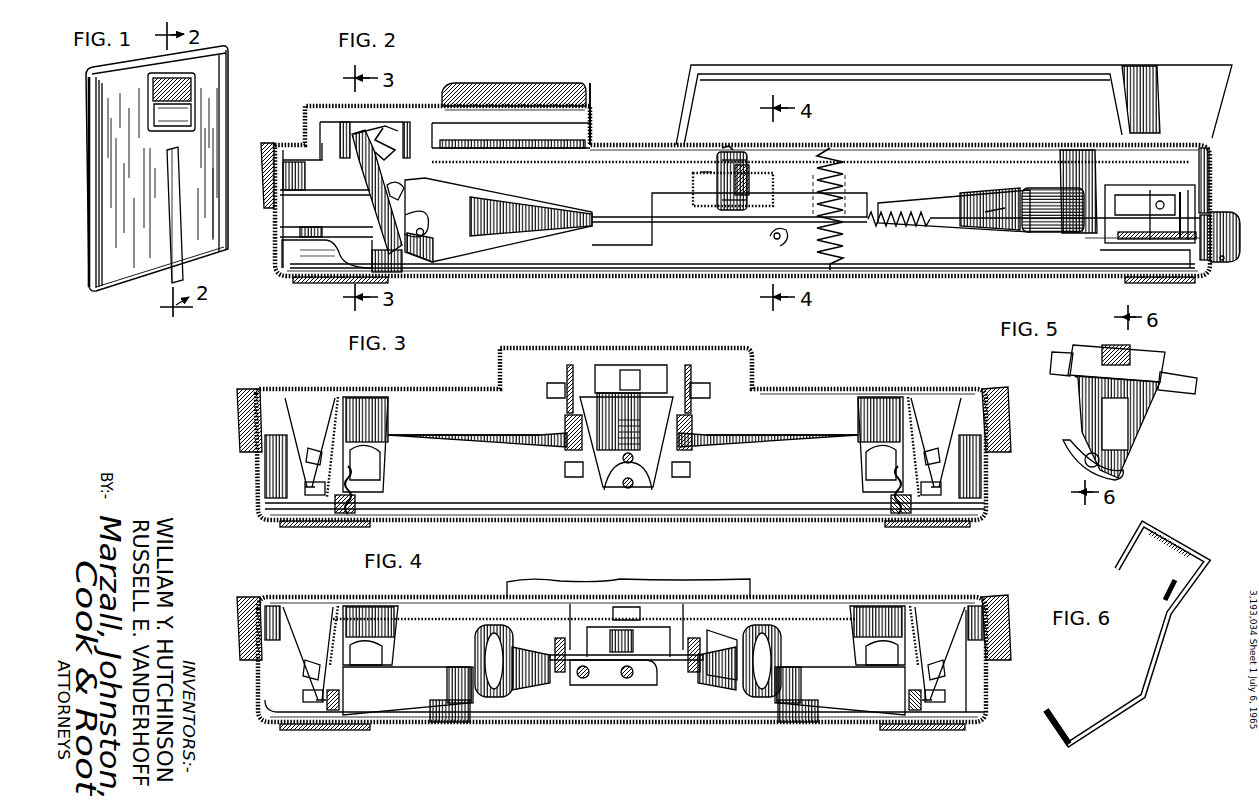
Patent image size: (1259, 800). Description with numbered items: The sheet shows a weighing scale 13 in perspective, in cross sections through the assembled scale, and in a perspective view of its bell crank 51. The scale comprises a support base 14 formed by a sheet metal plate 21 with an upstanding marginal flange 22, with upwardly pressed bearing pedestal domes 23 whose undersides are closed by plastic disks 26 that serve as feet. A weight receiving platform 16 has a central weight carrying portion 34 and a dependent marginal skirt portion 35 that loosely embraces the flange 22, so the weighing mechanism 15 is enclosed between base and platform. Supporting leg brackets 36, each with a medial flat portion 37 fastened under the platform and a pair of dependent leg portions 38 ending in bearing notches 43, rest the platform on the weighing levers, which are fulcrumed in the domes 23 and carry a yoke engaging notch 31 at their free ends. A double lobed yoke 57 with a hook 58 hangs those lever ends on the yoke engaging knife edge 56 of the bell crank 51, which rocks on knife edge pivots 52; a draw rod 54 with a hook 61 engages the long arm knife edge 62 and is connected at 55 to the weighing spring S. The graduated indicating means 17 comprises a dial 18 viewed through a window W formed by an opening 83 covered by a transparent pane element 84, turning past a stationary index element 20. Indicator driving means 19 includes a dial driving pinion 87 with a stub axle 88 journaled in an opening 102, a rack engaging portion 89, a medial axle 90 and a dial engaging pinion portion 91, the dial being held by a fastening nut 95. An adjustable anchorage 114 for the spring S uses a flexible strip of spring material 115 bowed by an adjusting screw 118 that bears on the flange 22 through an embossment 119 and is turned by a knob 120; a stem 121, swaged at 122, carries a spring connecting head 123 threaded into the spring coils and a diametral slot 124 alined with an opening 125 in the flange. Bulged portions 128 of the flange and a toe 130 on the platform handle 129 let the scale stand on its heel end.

In FIG. 1, the weighing scale 13 is at (106, 297).
In FIG. 1, the support base 14 is at (88, 274).
In FIG. 2, the support base 14 is at (272, 284).
In FIG. 3, the support base 14 is at (254, 515).
In FIG. 4, the support base 14 is at (254, 723).
In FIG. 2, the weighing mechanism 15 is at (461, 262).
In FIG. 4, the weighing mechanism 15 is at (624, 684).
In FIG. 2, the weight receiving platform 16 is at (265, 135).
In FIG. 3, the weight receiving platform 16 is at (990, 384).
In FIG. 4, the weight receiving platform 16 is at (994, 594).
In FIG. 2, the graduated indicating means 17 is at (455, 72).
In FIG. 4, the graduated indicating means 17 is at (784, 606).
In FIG. 2, the dial 18 is at (922, 160).
In FIG. 2, the indicator driving means 19 is at (690, 184).
In FIG. 2, the index element 20 is at (512, 150).
In FIG. 2, the sheet metal plate 21 is at (585, 278).
In FIG. 3, the sheet metal plate 21 is at (586, 524).
In FIG. 4, the sheet metal plate 21 is at (558, 731).
In FIG. 4, the upstanding marginal flange 22 is at (990, 683).
In FIG. 2, the bearing pedestal dome 23 is at (322, 252).
In FIG. 4, the bearing pedestal dome 23 is at (306, 704).
In FIG. 2, the plastic disk 26 is at (322, 283).
In FIG. 3, the plastic disk 26 is at (318, 528).
In FIG. 4, the plastic disk 26 is at (350, 731).
In FIG. 2, the yoke engaging notch 31 is at (388, 190).
In FIG. 4, the yoke engaging notch 31 is at (480, 676).
In FIG. 2, the weight carrying portion 34 is at (636, 143).
In FIG. 3, the weight carrying portion 34 is at (841, 388).
In FIG. 4, the weight carrying portion 34 is at (470, 600).
In FIG. 2, the marginal skirt portion 35 is at (262, 170).
In FIG. 3, the marginal skirt portion 35 is at (245, 420).
In FIG. 4, the marginal skirt portion 35 is at (248, 618).
In FIG. 3, the supporting leg bracket 36 is at (400, 447).
In FIG. 3, the medial flat portion 37 is at (366, 398).
In FIG. 4, the medial flat portion 37 is at (366, 604).
In FIG. 3, the dependent leg portion 38 is at (312, 423).
In FIG. 4, the dependent leg portion 38 is at (312, 639).
In FIG. 3, the bearing notch 43 is at (308, 470).
In FIG. 4, the bearing notch 43 is at (308, 688).
In FIG. 3, the bell crank 51 is at (652, 398).
In FIG. 5, the bell crank 51 is at (1154, 434).
In FIG. 6, the bell crank 51 is at (1150, 718).
In FIG. 5, the knife edge pivot 52 is at (1062, 378).
In FIG. 6, the knife edge pivot 52 is at (1168, 604).
In FIG. 2, the draw rod 54 is at (590, 216).
In FIG. 3, the draw rod 54 is at (636, 482).
In FIG. 4, the draw rod 54 is at (643, 644).
In FIG. 2, the connection 55 is at (1018, 226).
In FIG. 5, the yoke engaging knife edge 56 is at (1122, 360).
In FIG. 6, the yoke engaging knife edge 56 is at (1140, 548).
In FIG. 2, the double lobed yoke 57 is at (352, 182).
In FIG. 3, the double lobed yoke 57 is at (628, 368).
In FIG. 2, the hook 58 is at (398, 124).
In FIG. 2, the hook 61 is at (410, 218).
In FIG. 2, the knife edge 62 is at (416, 256).
In FIG. 5, the knife edge 62 is at (1075, 468).
In FIG. 6, the knife edge 62 is at (1058, 716).
In FIG. 2, the opening 83 is at (586, 128).
In FIG. 2, the transparent pane element 84 is at (560, 84).
In FIG. 2, the dial driving pinion 87 is at (762, 186).
In FIG. 2, the stub axle 88 is at (729, 182).
In FIG. 2, the rack engaging portion 89 is at (718, 180).
In FIG. 2, the medial axle 90 is at (746, 182).
In FIG. 2, the dial engaging pinion portion 91 is at (708, 176).
In FIG. 2, the fastening nut 95 is at (729, 148).
In FIG. 2, the opening 102 is at (717, 172).
In FIG. 2, the adjustable anchorage 114 is at (1095, 240).
In FIG. 2, the flexible strip of spring material 115 is at (1160, 198).
In FIG. 2, the adjusting screw 118 is at (1122, 246).
In FIG. 2, the embossment 119 is at (1204, 250).
In FIG. 2, the knob 120 is at (1222, 264).
In FIG. 2, the stem 121 is at (1130, 194).
In FIG. 2, the swaged portion 122 is at (1156, 192).
In FIG. 2, the spring connecting head 123 is at (1056, 190).
In FIG. 2, the diametral slot 124 is at (1184, 196).
In FIG. 2, the opening 125 is at (1212, 214).
In FIG. 2, the bulged portion 128 is at (1226, 266).
In FIG. 2, the handle 129 is at (948, 64).
In FIG. 2, the toe 130 is at (1228, 70).
In FIG. 1, the window W is at (210, 113).
In FIG. 2, the window W is at (595, 96).
In FIG. 2, the weighing spring S is at (1030, 196).